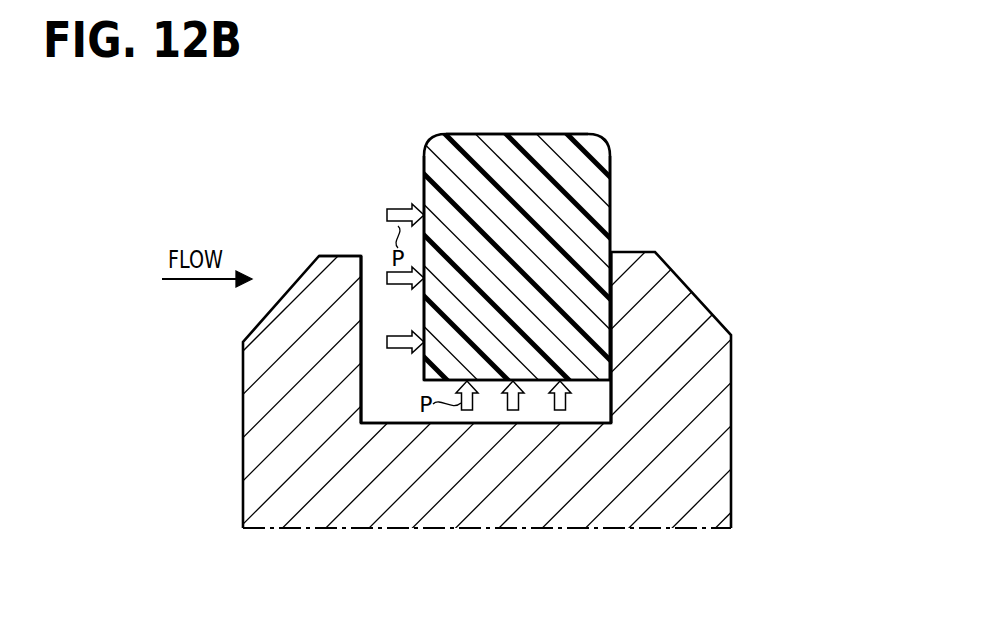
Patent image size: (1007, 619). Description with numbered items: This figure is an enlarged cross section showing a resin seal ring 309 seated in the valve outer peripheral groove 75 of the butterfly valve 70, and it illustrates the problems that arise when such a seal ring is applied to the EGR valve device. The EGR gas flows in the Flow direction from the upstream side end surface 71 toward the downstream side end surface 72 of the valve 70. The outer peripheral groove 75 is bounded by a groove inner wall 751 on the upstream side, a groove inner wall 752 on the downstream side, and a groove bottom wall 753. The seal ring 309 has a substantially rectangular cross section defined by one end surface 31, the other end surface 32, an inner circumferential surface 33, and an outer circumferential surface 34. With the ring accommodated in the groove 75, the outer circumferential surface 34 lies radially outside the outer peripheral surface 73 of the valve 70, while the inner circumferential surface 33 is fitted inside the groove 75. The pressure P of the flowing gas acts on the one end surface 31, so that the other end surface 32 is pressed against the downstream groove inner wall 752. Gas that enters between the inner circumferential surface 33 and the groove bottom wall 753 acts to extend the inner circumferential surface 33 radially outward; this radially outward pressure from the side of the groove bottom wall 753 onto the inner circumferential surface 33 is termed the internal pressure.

The resin seal ring 309 is at (581, 100).
The one end surface 31 is at (423, 182).
The other end surface 32 is at (611, 187).
The inner circumferential surface 33 is at (582, 381).
The outer circumferential surface 34 is at (479, 134).
The valve 70 is at (475, 486).
The upstream side end surface 71 is at (243, 489).
The downstream side end surface 72 is at (731, 489).
The outer peripheral surface 73 is at (341, 256).
The valve outer peripheral groove 75 is at (537, 418).
The groove inner wall on the upstream side 751 is at (361, 390).
The groove inner wall on the downstream side 752 is at (611, 401).
The groove bottom wall 753 is at (408, 423).